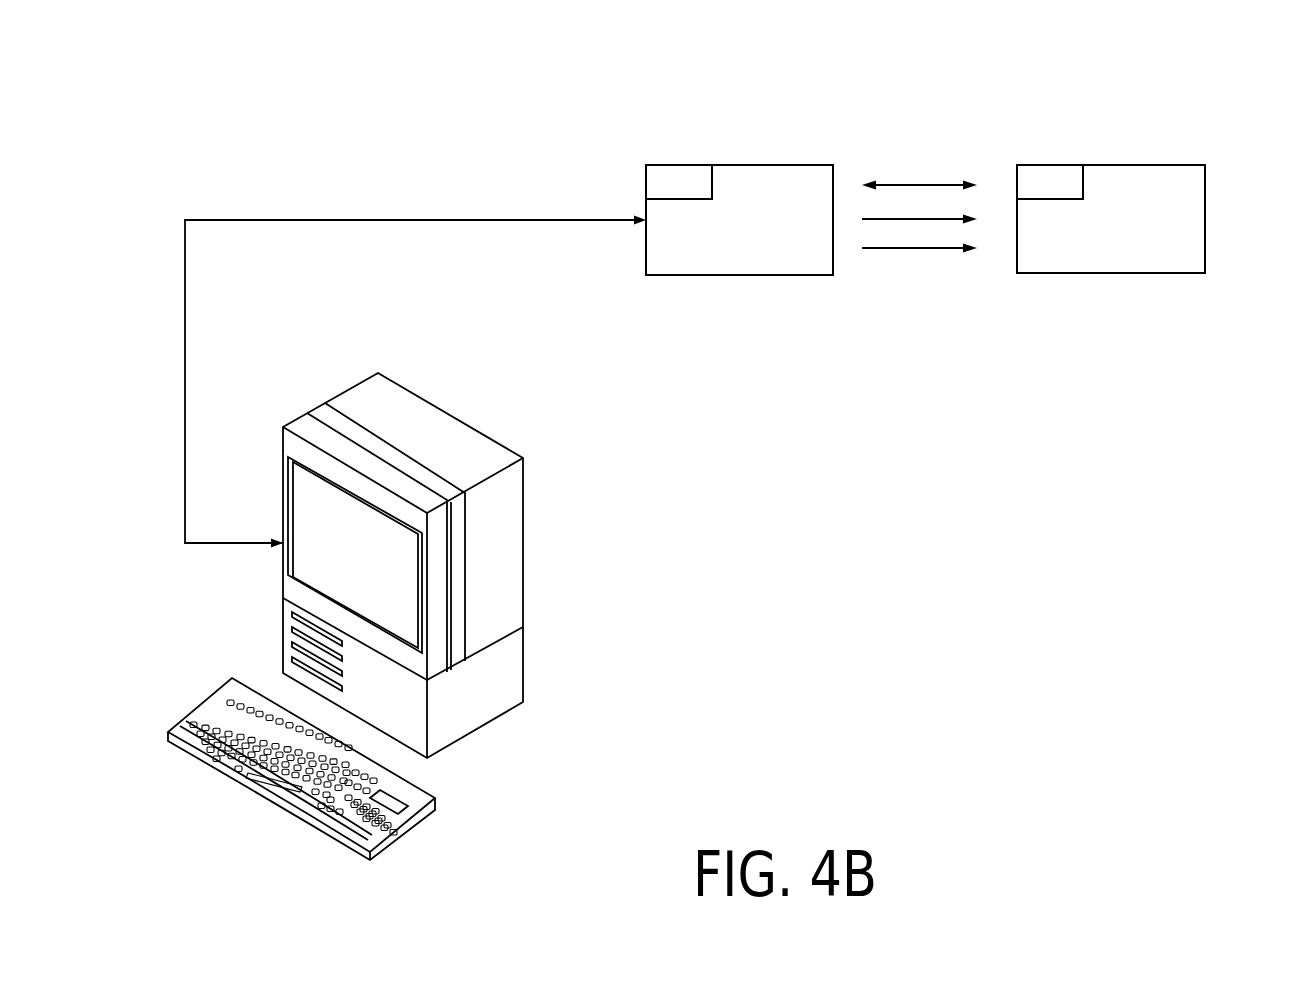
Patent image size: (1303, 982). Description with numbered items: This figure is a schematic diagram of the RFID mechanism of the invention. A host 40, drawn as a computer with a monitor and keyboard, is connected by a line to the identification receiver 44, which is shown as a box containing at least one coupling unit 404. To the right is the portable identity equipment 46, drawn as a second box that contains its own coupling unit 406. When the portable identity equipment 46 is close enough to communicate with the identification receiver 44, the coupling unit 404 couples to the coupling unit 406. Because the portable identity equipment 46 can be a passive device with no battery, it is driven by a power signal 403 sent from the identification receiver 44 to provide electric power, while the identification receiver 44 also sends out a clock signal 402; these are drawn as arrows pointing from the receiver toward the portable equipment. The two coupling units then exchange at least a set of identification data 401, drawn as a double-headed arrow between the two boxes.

The host 40 is at (533, 545).
The identification receiver 44 is at (785, 180).
The coupling unit 404 is at (673, 177).
The portable identity equipment 46 is at (1157, 188).
The coupling unit 406 is at (1057, 183).
The identification data 401 is at (918, 183).
The clock signal 402 is at (889, 219).
The power signal 403 is at (920, 248).